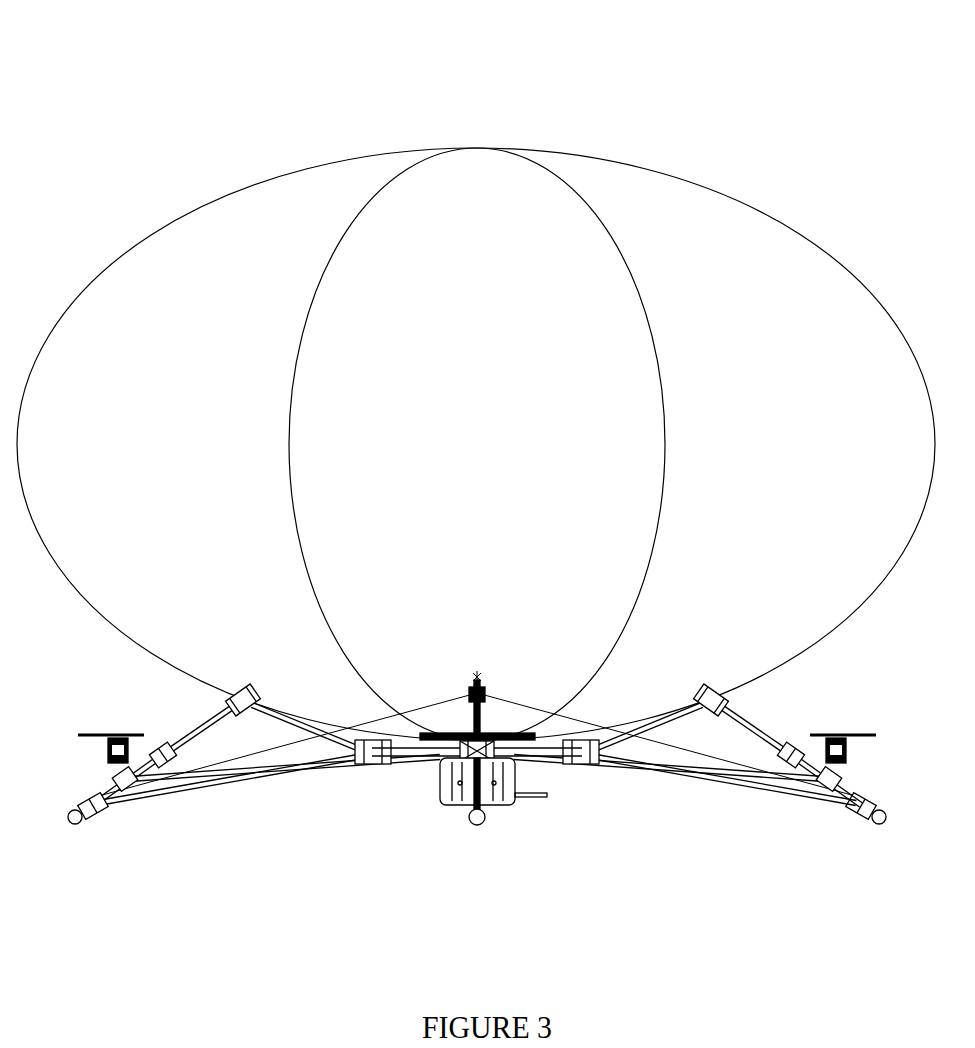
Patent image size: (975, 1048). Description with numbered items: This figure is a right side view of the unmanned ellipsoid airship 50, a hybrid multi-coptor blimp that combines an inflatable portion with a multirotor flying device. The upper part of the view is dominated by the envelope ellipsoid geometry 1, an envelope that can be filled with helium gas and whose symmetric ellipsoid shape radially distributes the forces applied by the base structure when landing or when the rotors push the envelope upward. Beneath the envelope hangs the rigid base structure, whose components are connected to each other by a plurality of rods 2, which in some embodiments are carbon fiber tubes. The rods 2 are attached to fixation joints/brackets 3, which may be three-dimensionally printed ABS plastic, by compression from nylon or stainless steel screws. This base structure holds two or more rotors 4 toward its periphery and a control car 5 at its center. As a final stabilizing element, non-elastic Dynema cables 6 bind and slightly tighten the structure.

The unmanned ellipsoid airship 50 is at (296, 124).
The envelope ellipsoid geometry 1 is at (111, 633).
The rods 2 is at (705, 786).
The fixation joints/brackets 3 is at (848, 823).
The rotors 4 is at (97, 749).
The control car 5 is at (437, 796).
The non-elastic Dynema cables 6 is at (272, 753).